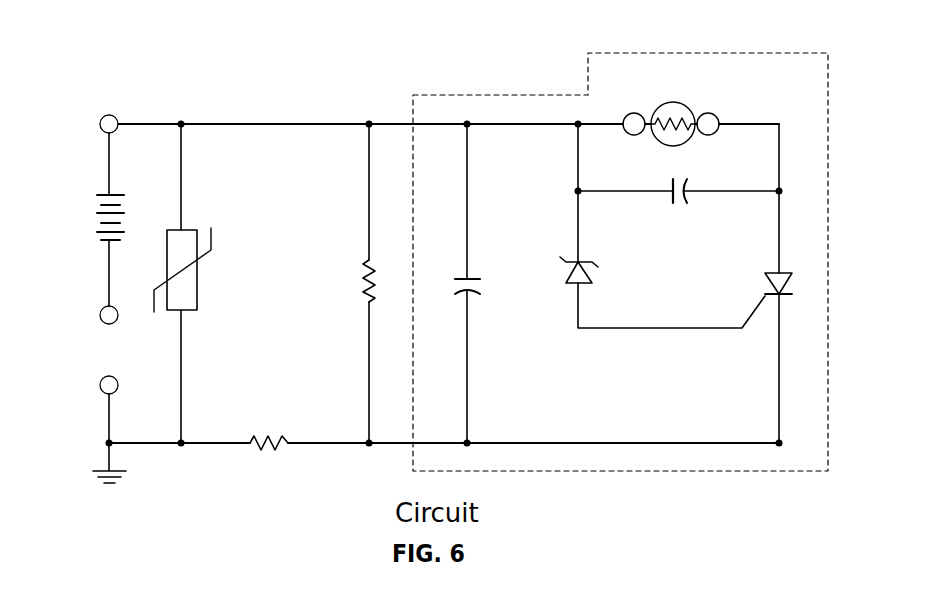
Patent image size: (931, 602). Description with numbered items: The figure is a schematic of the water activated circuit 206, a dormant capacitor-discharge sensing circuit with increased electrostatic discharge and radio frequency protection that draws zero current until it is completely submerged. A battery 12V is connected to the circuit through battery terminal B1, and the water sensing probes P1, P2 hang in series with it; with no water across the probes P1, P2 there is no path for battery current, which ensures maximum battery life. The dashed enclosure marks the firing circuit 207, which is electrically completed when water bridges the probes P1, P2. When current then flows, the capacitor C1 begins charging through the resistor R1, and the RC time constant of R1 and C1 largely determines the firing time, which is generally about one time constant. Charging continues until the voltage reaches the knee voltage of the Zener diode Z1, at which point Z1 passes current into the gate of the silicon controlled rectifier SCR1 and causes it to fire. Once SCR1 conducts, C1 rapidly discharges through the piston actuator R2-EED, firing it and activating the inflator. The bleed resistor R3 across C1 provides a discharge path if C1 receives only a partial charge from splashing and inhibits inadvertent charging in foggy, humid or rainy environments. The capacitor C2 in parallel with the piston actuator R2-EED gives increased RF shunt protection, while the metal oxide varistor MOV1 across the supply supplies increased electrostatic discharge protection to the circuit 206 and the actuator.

The electrical circuit system 206 is at (128, 42).
The firing circuit 207 is at (655, 470).
The battery terminal B1 is at (89, 126).
The battery 12V is at (82, 219).
The water sensing probe P1 is at (90, 317).
The water sensing probe P2 is at (90, 407).
The metal oxide varistor MOV1 is at (211, 283).
The resistor R1 is at (270, 460).
The resistor R3 is at (348, 283).
The capacitor C1 is at (450, 283).
The piston actuator R2-EED is at (671, 109).
The capacitor C2 is at (678, 203).
The Zener diode Z1 is at (662, 226).
The silicon controlled rectifier SCR1 is at (815, 283).